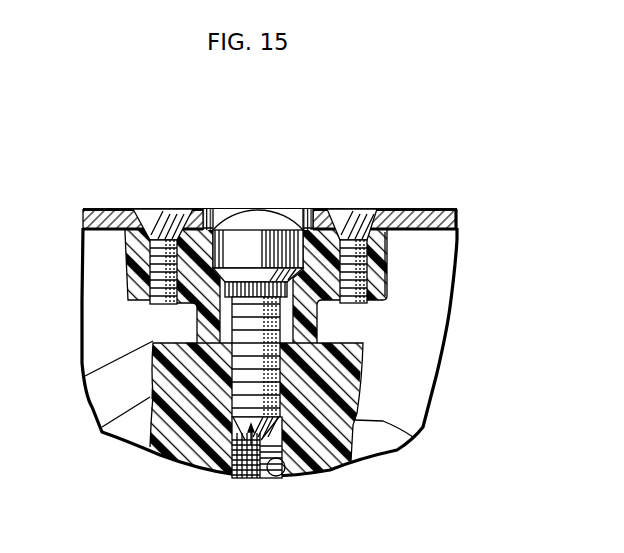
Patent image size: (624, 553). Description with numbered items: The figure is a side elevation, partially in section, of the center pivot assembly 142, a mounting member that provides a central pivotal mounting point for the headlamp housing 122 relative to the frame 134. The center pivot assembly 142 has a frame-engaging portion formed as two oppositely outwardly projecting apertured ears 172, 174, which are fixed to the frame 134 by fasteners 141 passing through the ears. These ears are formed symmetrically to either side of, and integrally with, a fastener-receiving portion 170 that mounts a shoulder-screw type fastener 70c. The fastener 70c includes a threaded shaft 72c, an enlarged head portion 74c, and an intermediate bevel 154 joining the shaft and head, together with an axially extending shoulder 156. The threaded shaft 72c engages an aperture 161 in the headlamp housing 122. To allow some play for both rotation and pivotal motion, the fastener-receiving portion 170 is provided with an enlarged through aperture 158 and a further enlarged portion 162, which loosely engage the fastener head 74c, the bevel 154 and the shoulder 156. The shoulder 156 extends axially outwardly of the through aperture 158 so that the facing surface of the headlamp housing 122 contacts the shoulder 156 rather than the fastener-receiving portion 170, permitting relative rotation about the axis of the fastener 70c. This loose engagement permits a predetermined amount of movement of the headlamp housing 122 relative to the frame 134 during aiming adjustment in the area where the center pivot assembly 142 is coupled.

The frame 134 is at (427, 217).
The bevel 154 is at (220, 222).
The shoulder 156 is at (228, 272).
The head portion 74c is at (252, 290).
The enlarged portion 162 is at (313, 217).
The apertured ear 172 is at (125, 260).
The fasteners 141 is at (162, 304).
The fastener-receiving portion 170 is at (85, 376).
The threaded shaft 72c is at (102, 427).
The center pivot assembly 142 is at (394, 248).
The apertured ear 174 is at (387, 280).
The enlarged through aperture 158 is at (352, 336).
The headlamp housing 122 is at (413, 437).
The fastener 70c is at (237, 477).
The aperture 161 is at (277, 478).